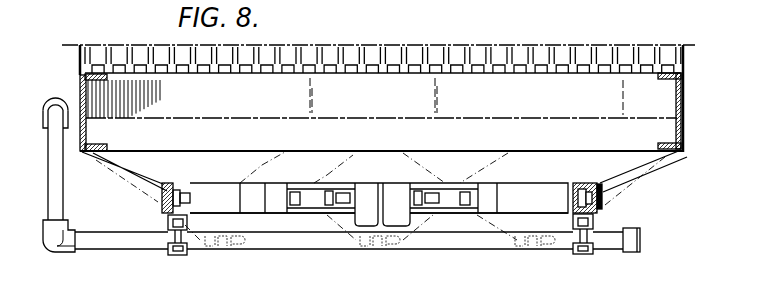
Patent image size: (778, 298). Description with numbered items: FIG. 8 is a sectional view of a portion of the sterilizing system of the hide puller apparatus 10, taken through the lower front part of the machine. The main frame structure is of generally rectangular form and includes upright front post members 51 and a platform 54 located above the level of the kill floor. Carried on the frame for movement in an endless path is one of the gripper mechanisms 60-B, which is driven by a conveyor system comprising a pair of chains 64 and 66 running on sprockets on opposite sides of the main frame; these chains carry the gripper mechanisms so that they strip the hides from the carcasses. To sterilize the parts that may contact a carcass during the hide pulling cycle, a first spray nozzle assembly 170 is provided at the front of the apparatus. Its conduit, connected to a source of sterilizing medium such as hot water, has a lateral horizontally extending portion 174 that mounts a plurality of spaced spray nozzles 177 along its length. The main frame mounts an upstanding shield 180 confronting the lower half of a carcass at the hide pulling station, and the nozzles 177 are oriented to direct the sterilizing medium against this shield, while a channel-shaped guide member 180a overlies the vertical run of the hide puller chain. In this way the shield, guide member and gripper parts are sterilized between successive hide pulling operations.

The apparatus 10 is at (690, 135).
The front post members 51 is at (79, 84).
The platform 54 is at (343, 45).
The gripper mechanism 60-B is at (379, 193).
The chain 64 is at (181, 187).
The chain 66 is at (586, 186).
The first spray nozzle assembly 170 is at (605, 252).
The lateral horizontally extending portion 174 is at (450, 246).
The spray nozzles 177 is at (212, 252).
The upstanding shield 180 is at (388, 106).
The channel-shaped guide member 180a is at (165, 211).